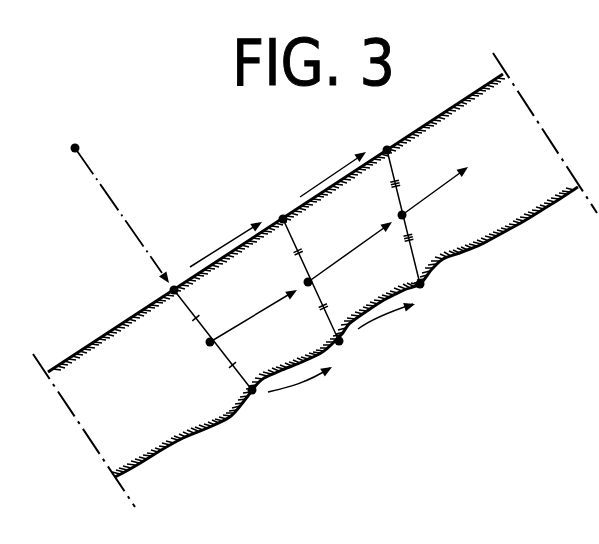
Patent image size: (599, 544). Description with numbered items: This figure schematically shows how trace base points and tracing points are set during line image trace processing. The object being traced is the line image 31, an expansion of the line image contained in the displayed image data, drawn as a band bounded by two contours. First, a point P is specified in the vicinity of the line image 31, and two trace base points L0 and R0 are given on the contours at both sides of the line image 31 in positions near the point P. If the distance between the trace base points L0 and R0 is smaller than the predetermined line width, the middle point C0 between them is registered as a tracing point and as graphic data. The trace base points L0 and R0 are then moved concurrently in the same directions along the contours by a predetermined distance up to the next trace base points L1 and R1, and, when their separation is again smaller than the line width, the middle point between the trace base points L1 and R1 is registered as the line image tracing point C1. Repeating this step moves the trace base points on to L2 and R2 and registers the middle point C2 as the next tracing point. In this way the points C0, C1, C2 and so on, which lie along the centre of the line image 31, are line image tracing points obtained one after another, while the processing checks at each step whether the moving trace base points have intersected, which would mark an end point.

The line image 31 is at (515, 225).
The point P is at (120, 195).
The trace base point L0 is at (144, 284).
The trace base point L1 is at (267, 203).
The trace base point L2 is at (373, 129).
The middle point (tracing point) C0 is at (207, 344).
The line image tracing point C1 is at (305, 282).
The line image tracing point C2 is at (399, 215).
The trace base point R0 is at (273, 414).
The trace base point R1 is at (358, 357).
The trace base point R2 is at (442, 296).